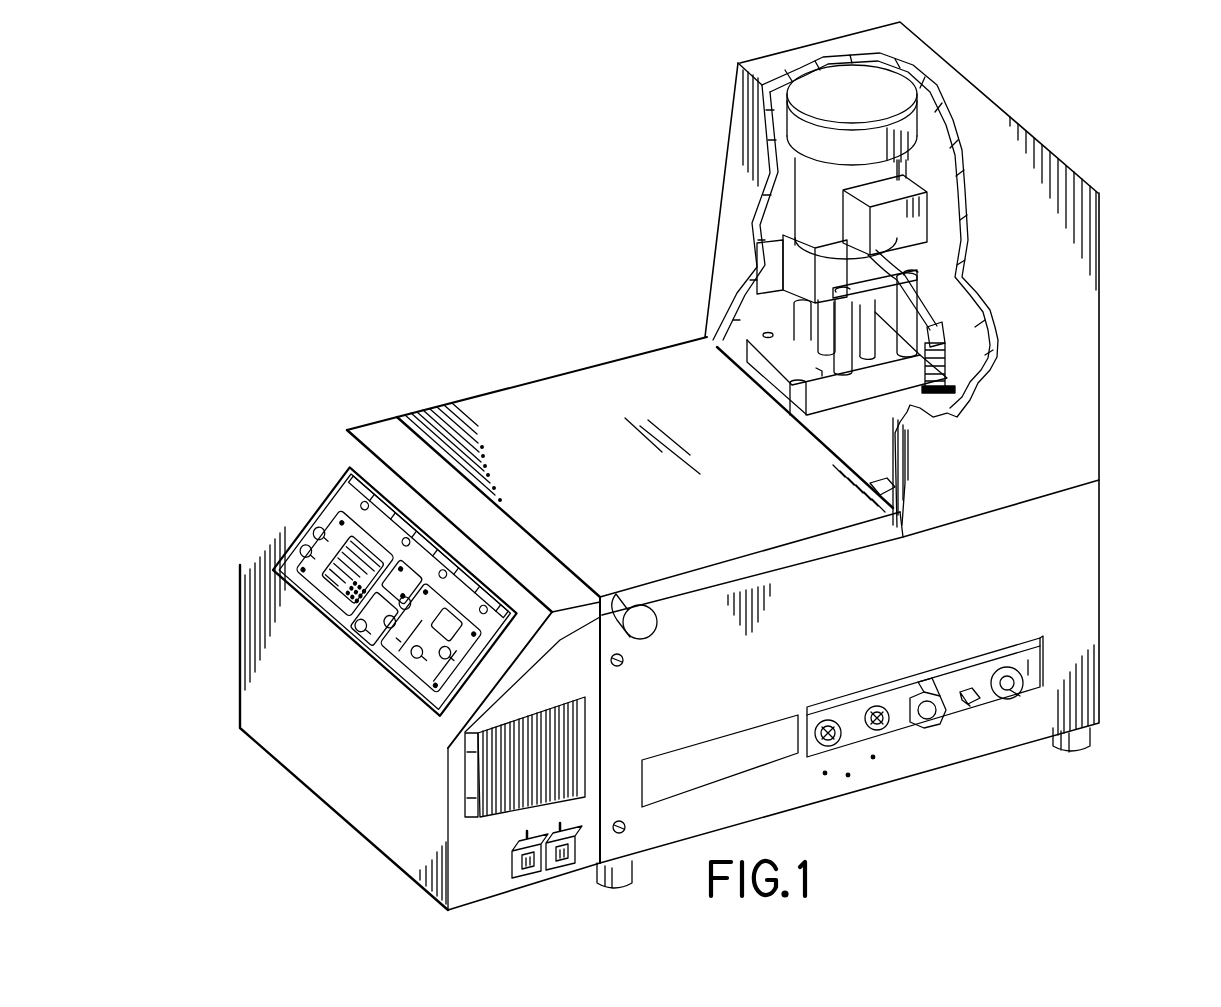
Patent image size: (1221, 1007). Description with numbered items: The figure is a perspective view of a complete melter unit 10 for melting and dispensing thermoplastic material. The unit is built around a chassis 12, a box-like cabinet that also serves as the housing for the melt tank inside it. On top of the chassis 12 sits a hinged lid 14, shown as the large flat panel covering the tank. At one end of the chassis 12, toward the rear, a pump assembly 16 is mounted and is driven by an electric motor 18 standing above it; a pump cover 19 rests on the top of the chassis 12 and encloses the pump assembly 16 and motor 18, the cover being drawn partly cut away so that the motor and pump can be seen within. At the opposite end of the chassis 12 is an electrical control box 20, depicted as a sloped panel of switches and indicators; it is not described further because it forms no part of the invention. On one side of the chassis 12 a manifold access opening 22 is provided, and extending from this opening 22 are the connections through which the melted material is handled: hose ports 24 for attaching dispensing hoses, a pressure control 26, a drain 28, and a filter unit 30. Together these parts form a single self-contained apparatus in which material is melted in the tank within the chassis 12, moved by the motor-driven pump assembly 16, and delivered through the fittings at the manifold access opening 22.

The melter unit 10 is at (1117, 287).
The chassis 12 is at (1080, 530).
The hinged lid 14 is at (570, 378).
The pump assembly 16 is at (768, 312).
The electric motor 18 is at (893, 92).
The pump cover 19 is at (1018, 150).
The electrical control box 20 is at (300, 505).
The manifold access opening 22 is at (1043, 672).
The hose ports 24 is at (883, 733).
The pressure control 26 is at (945, 722).
The drain 28 is at (973, 703).
The filter unit 30 is at (1020, 700).